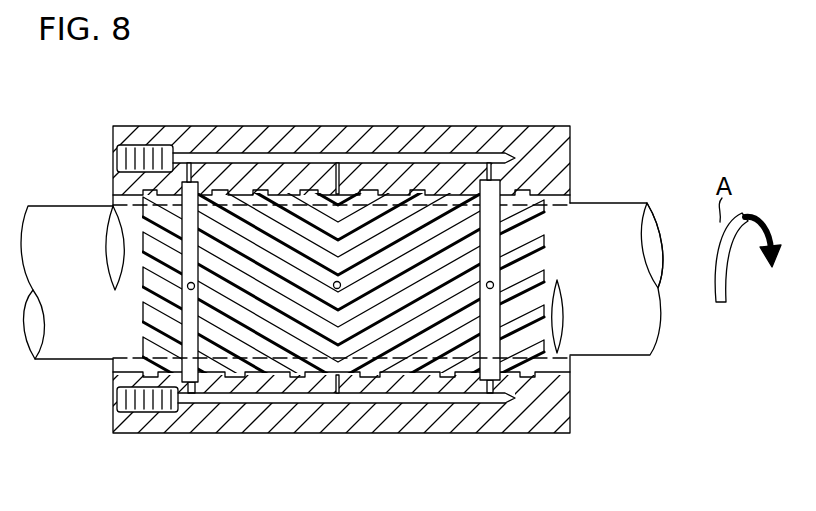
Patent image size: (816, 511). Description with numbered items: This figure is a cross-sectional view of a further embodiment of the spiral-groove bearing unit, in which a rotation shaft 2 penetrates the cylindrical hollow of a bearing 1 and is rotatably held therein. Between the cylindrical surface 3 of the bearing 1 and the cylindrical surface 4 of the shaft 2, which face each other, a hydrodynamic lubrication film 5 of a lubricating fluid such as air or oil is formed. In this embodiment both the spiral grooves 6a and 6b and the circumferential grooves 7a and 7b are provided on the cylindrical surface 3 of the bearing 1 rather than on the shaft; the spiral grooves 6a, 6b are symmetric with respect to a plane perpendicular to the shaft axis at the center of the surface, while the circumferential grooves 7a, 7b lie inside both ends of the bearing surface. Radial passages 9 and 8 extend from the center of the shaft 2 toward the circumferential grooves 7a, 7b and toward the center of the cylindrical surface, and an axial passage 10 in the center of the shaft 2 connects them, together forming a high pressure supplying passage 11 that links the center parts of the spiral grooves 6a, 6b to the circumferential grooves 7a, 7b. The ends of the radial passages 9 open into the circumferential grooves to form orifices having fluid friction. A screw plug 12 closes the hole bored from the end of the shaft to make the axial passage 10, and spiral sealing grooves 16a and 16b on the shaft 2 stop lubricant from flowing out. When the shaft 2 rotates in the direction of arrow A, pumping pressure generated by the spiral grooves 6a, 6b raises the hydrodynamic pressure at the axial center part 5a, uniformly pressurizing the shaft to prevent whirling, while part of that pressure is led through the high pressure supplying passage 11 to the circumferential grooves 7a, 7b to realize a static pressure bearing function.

The bearing 1 is at (377, 143).
The rotation shaft 2 is at (50, 247).
The cylindrical surface of the bearing 3 is at (268, 193).
The cylindrical surface of the shaft 4 is at (443, 205).
The hydrodynamic lubrication film 5 is at (233, 257).
The axial center part 5a is at (343, 190).
The spiral groove 6a is at (178, 172).
The spiral groove 6b is at (425, 257).
The circumferential groove 7a is at (190, 237).
The circumferential groove 7b is at (510, 185).
The radial passage 8 is at (334, 282).
The radial passage 9 is at (143, 335).
The axial passage 10 is at (393, 395).
The high pressure supplying passage 11 is at (257, 393).
The screw plug 12 is at (130, 412).
The sealing groove 16a is at (143, 280).
The sealing groove 16b is at (550, 240).